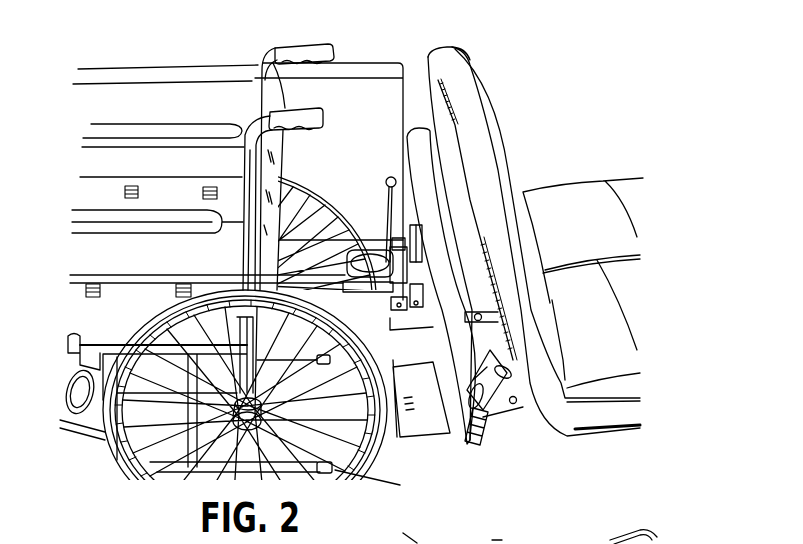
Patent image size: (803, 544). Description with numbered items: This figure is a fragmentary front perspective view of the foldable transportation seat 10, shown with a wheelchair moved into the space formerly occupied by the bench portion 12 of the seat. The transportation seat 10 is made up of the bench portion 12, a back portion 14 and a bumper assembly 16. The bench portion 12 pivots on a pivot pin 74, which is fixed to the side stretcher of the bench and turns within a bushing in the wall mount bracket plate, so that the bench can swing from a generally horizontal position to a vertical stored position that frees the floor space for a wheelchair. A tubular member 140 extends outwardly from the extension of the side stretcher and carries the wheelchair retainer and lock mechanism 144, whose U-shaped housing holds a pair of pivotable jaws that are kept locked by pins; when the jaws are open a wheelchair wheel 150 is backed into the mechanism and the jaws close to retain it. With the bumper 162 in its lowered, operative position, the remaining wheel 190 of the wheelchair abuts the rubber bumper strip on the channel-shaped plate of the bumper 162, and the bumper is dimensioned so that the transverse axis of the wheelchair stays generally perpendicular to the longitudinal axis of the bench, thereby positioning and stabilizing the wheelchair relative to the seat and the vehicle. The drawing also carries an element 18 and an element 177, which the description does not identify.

The transportation seat 10 is at (497, 543).
The bench portion 12 is at (345, 90).
The back portion 14 is at (398, 533).
The bumper assembly 16 is at (457, 284).
The vehicle seat cushion 18 is at (723, 543).
The pivot pin 74 is at (420, 227).
The tubular member 140 is at (522, 195).
The wheelchair retainer and lock mechanism 144 is at (375, 232).
The wheelchair wheel 150 is at (326, 182).
The bumper 162 is at (423, 408).
The floor anchor 177 is at (593, 540).
The remaining wheel 190 is at (380, 472).